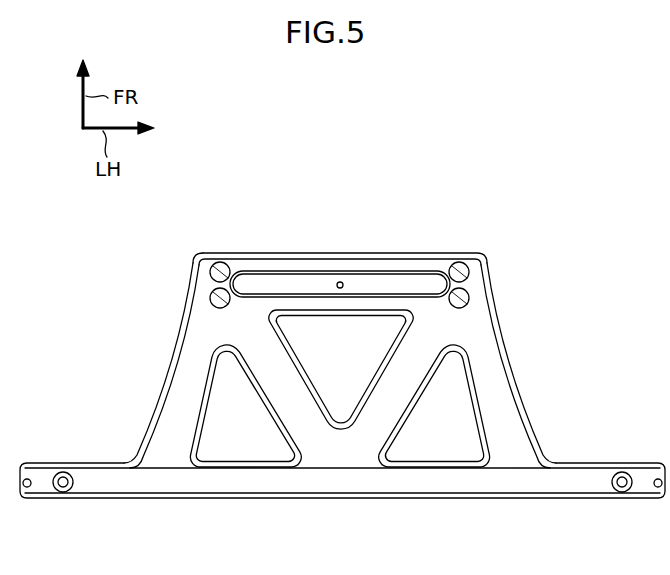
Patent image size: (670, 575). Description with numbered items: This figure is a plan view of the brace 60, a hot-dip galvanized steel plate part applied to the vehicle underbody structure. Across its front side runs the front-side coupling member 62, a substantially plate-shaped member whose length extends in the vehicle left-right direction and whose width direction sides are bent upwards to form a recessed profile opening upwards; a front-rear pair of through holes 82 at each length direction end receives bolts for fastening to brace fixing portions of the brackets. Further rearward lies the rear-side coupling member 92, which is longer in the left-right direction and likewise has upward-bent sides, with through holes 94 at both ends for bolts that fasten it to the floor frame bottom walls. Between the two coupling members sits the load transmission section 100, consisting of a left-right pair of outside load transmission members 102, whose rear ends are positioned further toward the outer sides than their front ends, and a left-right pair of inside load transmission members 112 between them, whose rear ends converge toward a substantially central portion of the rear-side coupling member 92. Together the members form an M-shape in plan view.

The brace 60 is at (476, 193).
The front-side coupling member 62 is at (375, 262).
The through holes 82 is at (226, 263).
The rear-side coupling member 92 is at (447, 486).
The through holes 94 is at (63, 493).
The load transmission section 100 is at (518, 357).
The outside load transmission members 102 is at (507, 404).
The inside load transmission members 112 is at (280, 392).